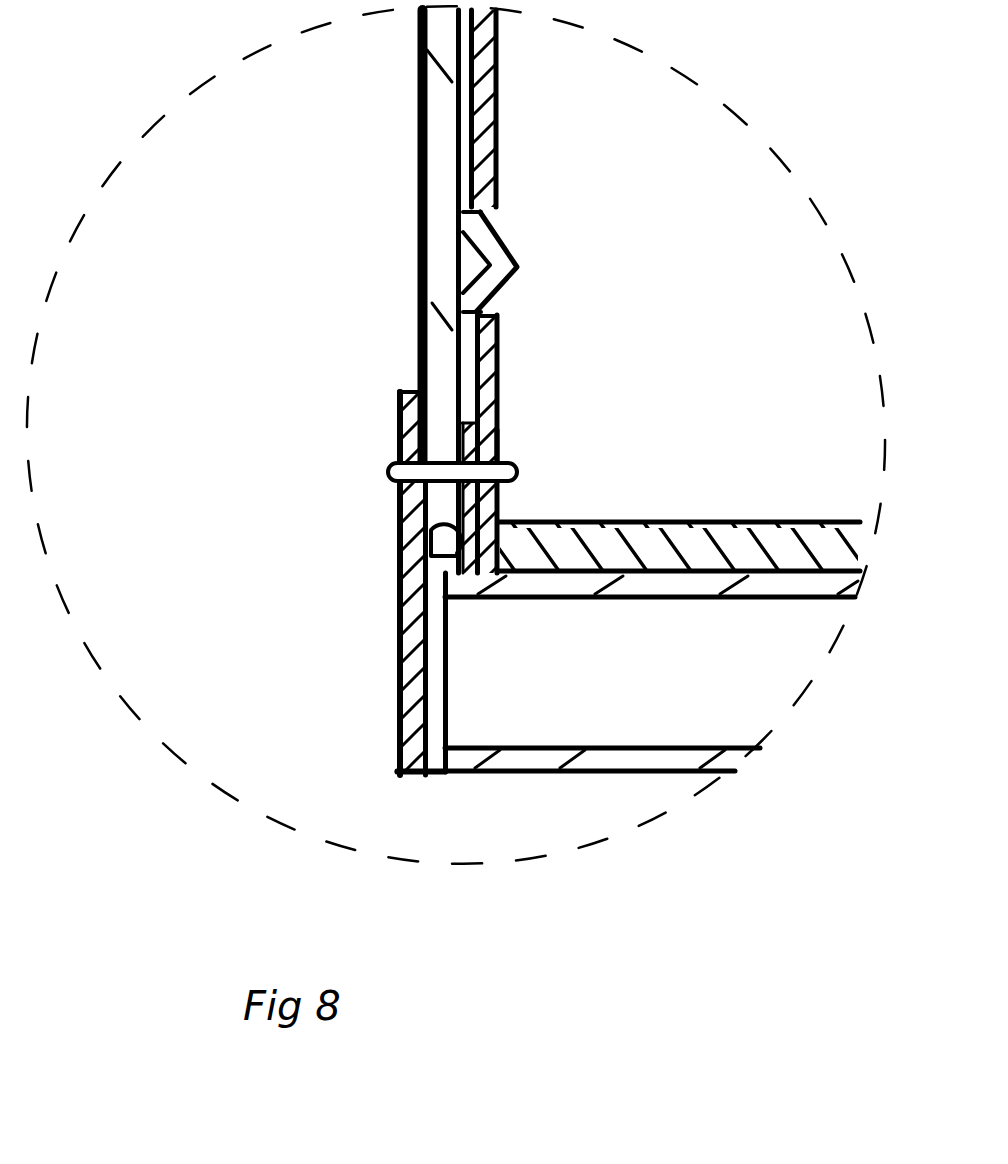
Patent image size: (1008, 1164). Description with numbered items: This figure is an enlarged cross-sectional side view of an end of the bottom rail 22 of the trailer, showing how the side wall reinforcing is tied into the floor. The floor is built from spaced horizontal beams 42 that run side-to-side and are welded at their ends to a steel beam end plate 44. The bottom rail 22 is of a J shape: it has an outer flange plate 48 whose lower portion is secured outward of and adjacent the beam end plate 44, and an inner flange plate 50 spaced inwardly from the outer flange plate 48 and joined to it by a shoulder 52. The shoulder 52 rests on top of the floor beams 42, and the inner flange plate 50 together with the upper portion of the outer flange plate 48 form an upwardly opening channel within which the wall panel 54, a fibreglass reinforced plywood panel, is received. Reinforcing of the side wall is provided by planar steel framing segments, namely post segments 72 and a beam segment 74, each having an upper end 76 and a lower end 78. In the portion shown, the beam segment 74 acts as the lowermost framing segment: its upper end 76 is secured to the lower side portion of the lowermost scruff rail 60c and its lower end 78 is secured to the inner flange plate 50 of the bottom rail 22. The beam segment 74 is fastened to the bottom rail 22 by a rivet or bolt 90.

The bottom rail 22 is at (396, 630).
The horizontal beams 42 is at (657, 772).
The beam end plate 44 is at (448, 683).
The outer flange plate 48 is at (398, 490).
The inner flange plate 50 is at (510, 480).
The shoulder 52 is at (425, 525).
The wall panel 54 is at (418, 153).
The lowermost scruff rail 60c is at (523, 240).
The post segments 72 is at (498, 100).
The beam segment 74 is at (508, 450).
The upper end 76 is at (500, 325).
The lower end 78 is at (497, 205).
The rivet or bolt 90 is at (382, 447).